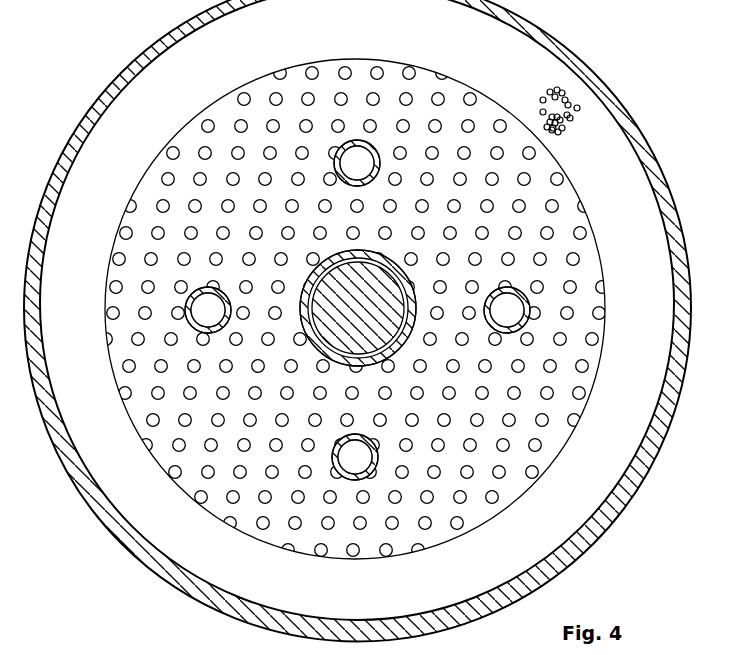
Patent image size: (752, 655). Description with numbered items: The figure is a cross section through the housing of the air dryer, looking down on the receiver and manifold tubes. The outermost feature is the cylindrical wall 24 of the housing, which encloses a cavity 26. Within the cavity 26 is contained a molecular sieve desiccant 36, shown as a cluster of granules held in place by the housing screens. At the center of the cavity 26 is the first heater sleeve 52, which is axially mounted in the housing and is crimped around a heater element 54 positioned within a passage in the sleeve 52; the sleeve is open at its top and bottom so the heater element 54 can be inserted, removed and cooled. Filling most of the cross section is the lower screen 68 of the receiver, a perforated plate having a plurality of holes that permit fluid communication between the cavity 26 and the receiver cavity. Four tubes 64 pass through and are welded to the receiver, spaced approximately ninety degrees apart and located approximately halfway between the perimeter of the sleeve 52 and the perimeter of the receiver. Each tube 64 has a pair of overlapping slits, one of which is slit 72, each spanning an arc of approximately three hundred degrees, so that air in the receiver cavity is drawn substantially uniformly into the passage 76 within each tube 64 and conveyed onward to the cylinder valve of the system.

The cylindrical wall 24 is at (663, 200).
The cavity 26 is at (620, 326).
The molecular sieve desiccant 36 is at (562, 90).
The first heater sleeve 52 is at (407, 333).
The heater element 54 is at (344, 321).
The tubes 64 is at (375, 177).
The lower screen 68 is at (155, 187).
The slit 72 is at (333, 173).
The passage 76 is at (357, 158).